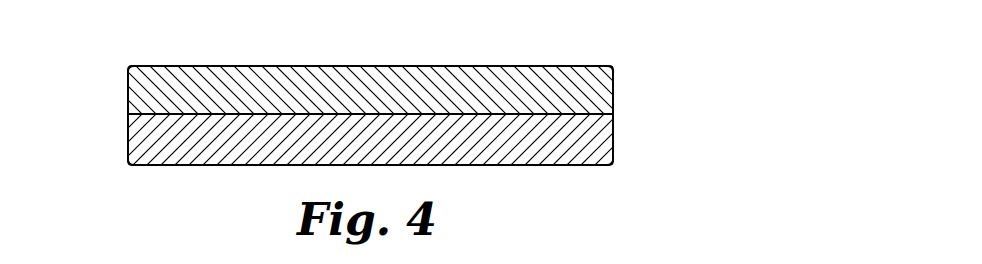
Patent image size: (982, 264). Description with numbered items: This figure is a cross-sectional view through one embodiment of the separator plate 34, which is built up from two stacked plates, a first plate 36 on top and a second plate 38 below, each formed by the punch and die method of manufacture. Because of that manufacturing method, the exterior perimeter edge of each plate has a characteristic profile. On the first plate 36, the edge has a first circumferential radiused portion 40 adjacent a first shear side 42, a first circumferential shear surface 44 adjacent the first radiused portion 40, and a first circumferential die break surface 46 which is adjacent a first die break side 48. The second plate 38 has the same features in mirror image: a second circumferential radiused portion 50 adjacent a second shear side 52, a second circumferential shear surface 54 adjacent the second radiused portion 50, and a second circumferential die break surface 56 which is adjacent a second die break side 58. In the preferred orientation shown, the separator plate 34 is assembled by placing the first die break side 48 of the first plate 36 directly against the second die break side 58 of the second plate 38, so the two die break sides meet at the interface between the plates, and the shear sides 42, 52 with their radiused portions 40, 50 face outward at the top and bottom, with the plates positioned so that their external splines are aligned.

The separator plate 34 is at (308, 62).
The first plate 36 is at (437, 72).
The second plate 38 is at (478, 145).
The first circumferential radiused portion 40 is at (129, 64).
The first shear side 42 is at (503, 64).
The first circumferential shear surface 44 is at (129, 76).
The first circumferential die break surface 46 is at (129, 98).
The first die break side 48 is at (253, 115).
The second circumferential radiused portion 50 is at (129, 162).
The second shear side 52 is at (537, 166).
The second circumferential shear surface 54 is at (129, 145).
The second circumferential die break surface 56 is at (129, 125).
The second die break side 58 is at (220, 114).